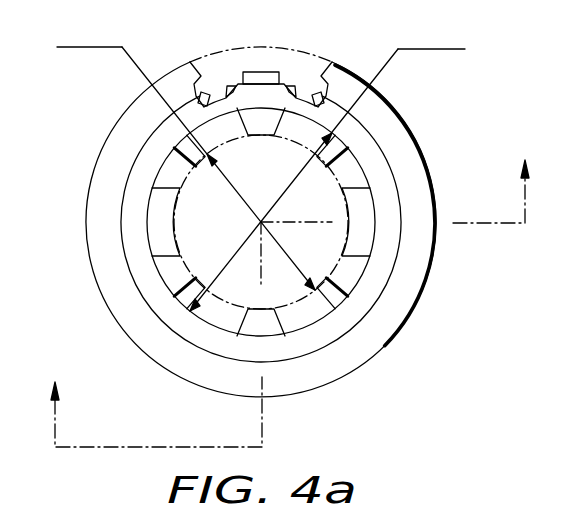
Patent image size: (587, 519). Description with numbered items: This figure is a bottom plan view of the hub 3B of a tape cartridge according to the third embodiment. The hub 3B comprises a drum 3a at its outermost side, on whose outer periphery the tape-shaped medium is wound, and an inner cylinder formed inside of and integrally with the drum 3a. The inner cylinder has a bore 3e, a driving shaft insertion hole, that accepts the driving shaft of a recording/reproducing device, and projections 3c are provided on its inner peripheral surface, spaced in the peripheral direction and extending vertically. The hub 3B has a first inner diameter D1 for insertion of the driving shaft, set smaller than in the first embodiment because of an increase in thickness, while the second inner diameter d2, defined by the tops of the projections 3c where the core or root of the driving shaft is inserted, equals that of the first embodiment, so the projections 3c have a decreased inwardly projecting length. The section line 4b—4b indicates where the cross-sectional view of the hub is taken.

The drum 3a is at (393, 338).
The hub 3B is at (428, 291).
The first inner diameter D1 is at (306, 176).
The second inner diameter d2 is at (202, 162).
The projections 3c is at (261, 136).
The bore 3e is at (188, 225).
The line 4b— 4b is at (291, 306).